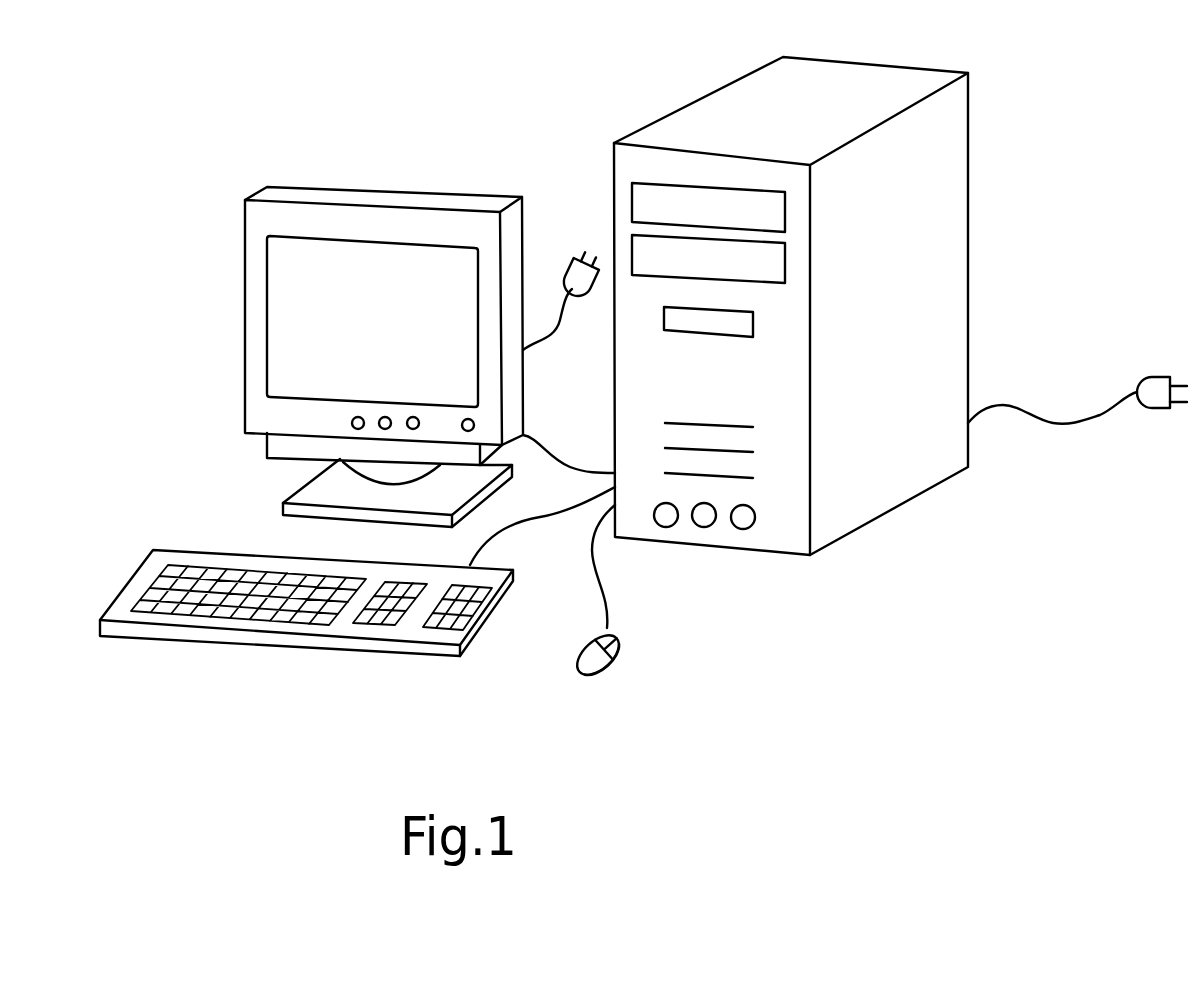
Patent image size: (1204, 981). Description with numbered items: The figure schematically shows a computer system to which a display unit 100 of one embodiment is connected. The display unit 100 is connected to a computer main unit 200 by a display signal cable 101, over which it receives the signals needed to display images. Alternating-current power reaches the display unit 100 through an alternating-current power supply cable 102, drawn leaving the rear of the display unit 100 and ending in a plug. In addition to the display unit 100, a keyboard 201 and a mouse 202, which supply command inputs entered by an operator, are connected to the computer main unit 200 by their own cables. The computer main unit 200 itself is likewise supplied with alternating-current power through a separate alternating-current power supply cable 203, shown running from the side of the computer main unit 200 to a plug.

The display unit 100 is at (245, 222).
The display signal cable 101 is at (577, 467).
The alternating-current power supply cable 102 is at (554, 327).
The computer main unit 200 is at (968, 130).
The keyboard 201 is at (242, 648).
The mouse 202 is at (612, 678).
The alternating-current power supply cable 203 is at (1028, 412).